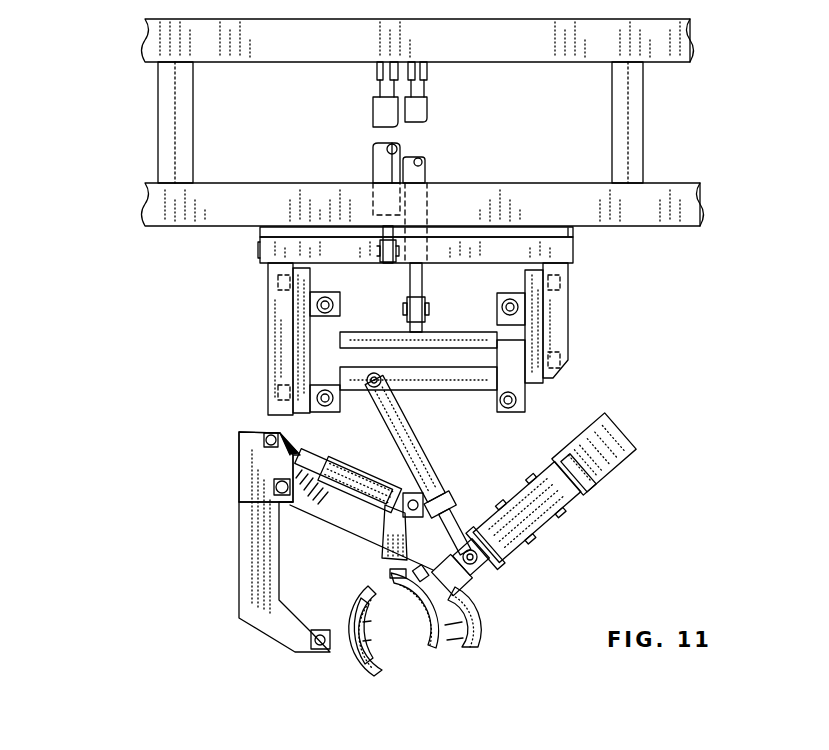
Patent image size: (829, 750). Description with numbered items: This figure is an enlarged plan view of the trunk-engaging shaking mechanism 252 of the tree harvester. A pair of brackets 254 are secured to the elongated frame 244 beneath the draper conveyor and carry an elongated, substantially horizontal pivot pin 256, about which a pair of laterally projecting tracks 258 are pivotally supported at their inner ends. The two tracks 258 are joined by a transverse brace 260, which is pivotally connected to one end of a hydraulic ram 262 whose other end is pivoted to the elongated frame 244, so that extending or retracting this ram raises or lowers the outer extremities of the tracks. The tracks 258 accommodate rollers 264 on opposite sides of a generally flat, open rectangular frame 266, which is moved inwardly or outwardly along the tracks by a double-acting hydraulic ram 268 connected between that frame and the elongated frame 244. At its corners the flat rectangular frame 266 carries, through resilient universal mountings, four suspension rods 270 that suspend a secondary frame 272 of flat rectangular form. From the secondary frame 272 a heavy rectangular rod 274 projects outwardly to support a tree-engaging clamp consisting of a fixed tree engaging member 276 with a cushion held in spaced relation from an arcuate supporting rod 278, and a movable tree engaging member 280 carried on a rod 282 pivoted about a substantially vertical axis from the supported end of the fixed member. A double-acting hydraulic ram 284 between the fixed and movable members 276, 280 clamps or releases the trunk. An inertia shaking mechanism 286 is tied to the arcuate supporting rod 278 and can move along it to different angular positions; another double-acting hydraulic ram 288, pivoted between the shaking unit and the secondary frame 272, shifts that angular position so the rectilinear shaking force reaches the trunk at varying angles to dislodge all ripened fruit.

The elongated frame 244 is at (590, 63).
The trunk-engaging shaking mechanism 252 is at (198, 494).
The brackets 254 is at (262, 232).
The pivot pin 256 is at (261, 250).
The tracks 258 is at (272, 352).
The transverse brace 260 is at (490, 247).
The hydraulic ram 262 is at (374, 163).
The rollers 264 is at (280, 286).
The flat rectangular frame 266 is at (375, 336).
The double-acting hydraulic ram 268 is at (425, 170).
The suspension rods 270 is at (326, 298).
The secondary frame 272 is at (498, 344).
The rectangular rod 274 is at (437, 432).
The fixed tree engaging member 276 is at (432, 645).
The arcuate supporting rod 278 is at (477, 640).
The movable tree engaging member 280 is at (362, 596).
The rod 282 is at (242, 572).
The double-acting hydraulic ram 284 is at (382, 460).
The inertia shaking mechanism 286 is at (605, 490).
The double-acting hydraulic ram 288 is at (450, 497).